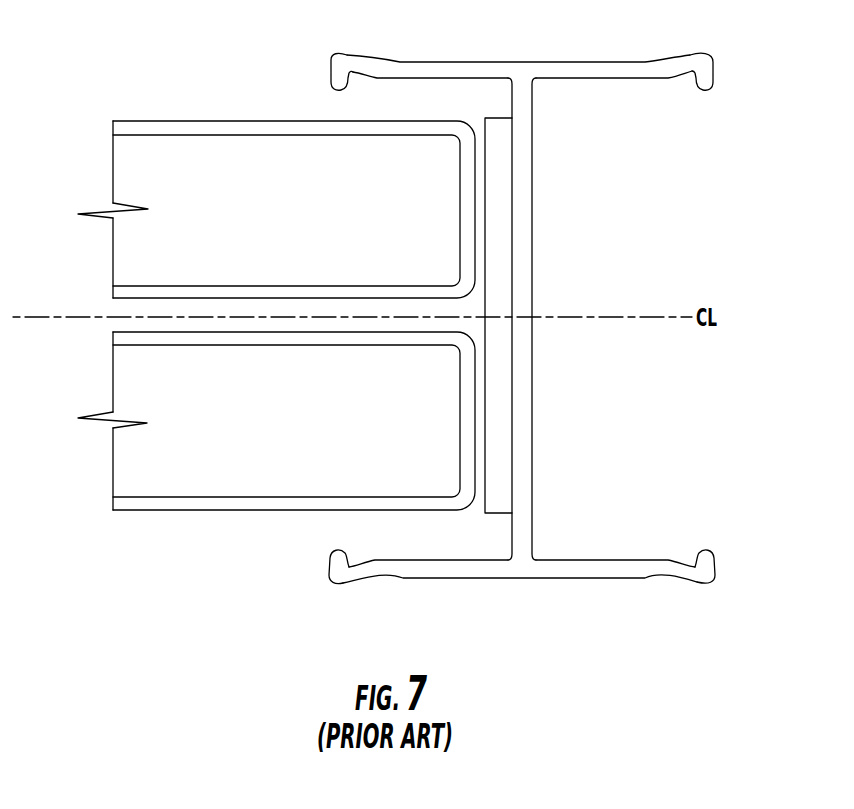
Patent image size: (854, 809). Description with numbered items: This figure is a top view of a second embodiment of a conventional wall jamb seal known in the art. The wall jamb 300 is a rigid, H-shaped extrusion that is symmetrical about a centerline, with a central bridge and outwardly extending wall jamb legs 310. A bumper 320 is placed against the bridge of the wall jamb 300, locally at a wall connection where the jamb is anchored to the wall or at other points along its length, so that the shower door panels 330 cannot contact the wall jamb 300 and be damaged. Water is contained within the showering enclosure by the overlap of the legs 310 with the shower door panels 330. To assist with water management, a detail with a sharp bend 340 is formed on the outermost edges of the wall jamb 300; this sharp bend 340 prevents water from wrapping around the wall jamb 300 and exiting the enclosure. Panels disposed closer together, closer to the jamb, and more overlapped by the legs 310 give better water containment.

The wall jamb 300 is at (538, 223).
The wall jamb legs 310 is at (467, 62).
The bumper 320 is at (510, 401).
The shower door panels 330 is at (148, 246).
The sharp bend 340 is at (346, 56).